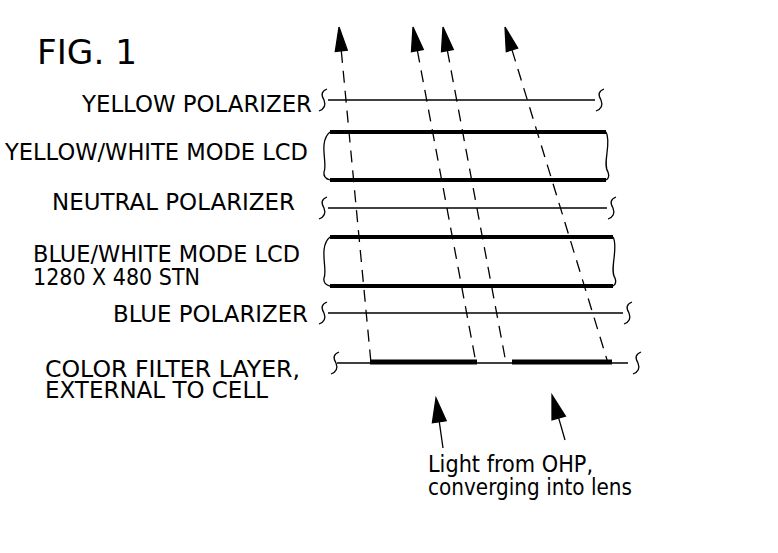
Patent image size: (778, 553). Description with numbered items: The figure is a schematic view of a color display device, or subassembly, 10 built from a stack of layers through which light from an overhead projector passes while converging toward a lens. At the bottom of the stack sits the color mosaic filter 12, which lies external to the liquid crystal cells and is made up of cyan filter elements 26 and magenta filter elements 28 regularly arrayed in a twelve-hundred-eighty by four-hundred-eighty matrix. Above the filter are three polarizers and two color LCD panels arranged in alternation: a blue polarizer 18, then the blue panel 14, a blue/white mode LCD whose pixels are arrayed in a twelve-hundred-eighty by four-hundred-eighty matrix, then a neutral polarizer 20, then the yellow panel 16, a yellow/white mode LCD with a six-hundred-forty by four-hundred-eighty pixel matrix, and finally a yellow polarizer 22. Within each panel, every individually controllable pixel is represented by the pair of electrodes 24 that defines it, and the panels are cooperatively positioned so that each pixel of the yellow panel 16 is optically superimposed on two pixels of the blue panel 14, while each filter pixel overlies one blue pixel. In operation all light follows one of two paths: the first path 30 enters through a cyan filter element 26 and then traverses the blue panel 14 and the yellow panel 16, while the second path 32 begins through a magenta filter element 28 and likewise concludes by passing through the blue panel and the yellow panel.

The display device 10 is at (575, 37).
The color mosaic filter 12 is at (519, 362).
The blue panel 14 is at (630, 252).
The yellow panel 16 is at (623, 151).
The blue polarizer 18 is at (630, 311).
The neutral polarizer 20 is at (613, 206).
The yellow polarizer 22 is at (601, 98).
The pair of electrodes 24 is at (487, 137).
The cyan filter element 26 is at (412, 361).
The magenta filter element 28 is at (530, 361).
The first path 30 is at (442, 436).
The second path 32 is at (565, 436).